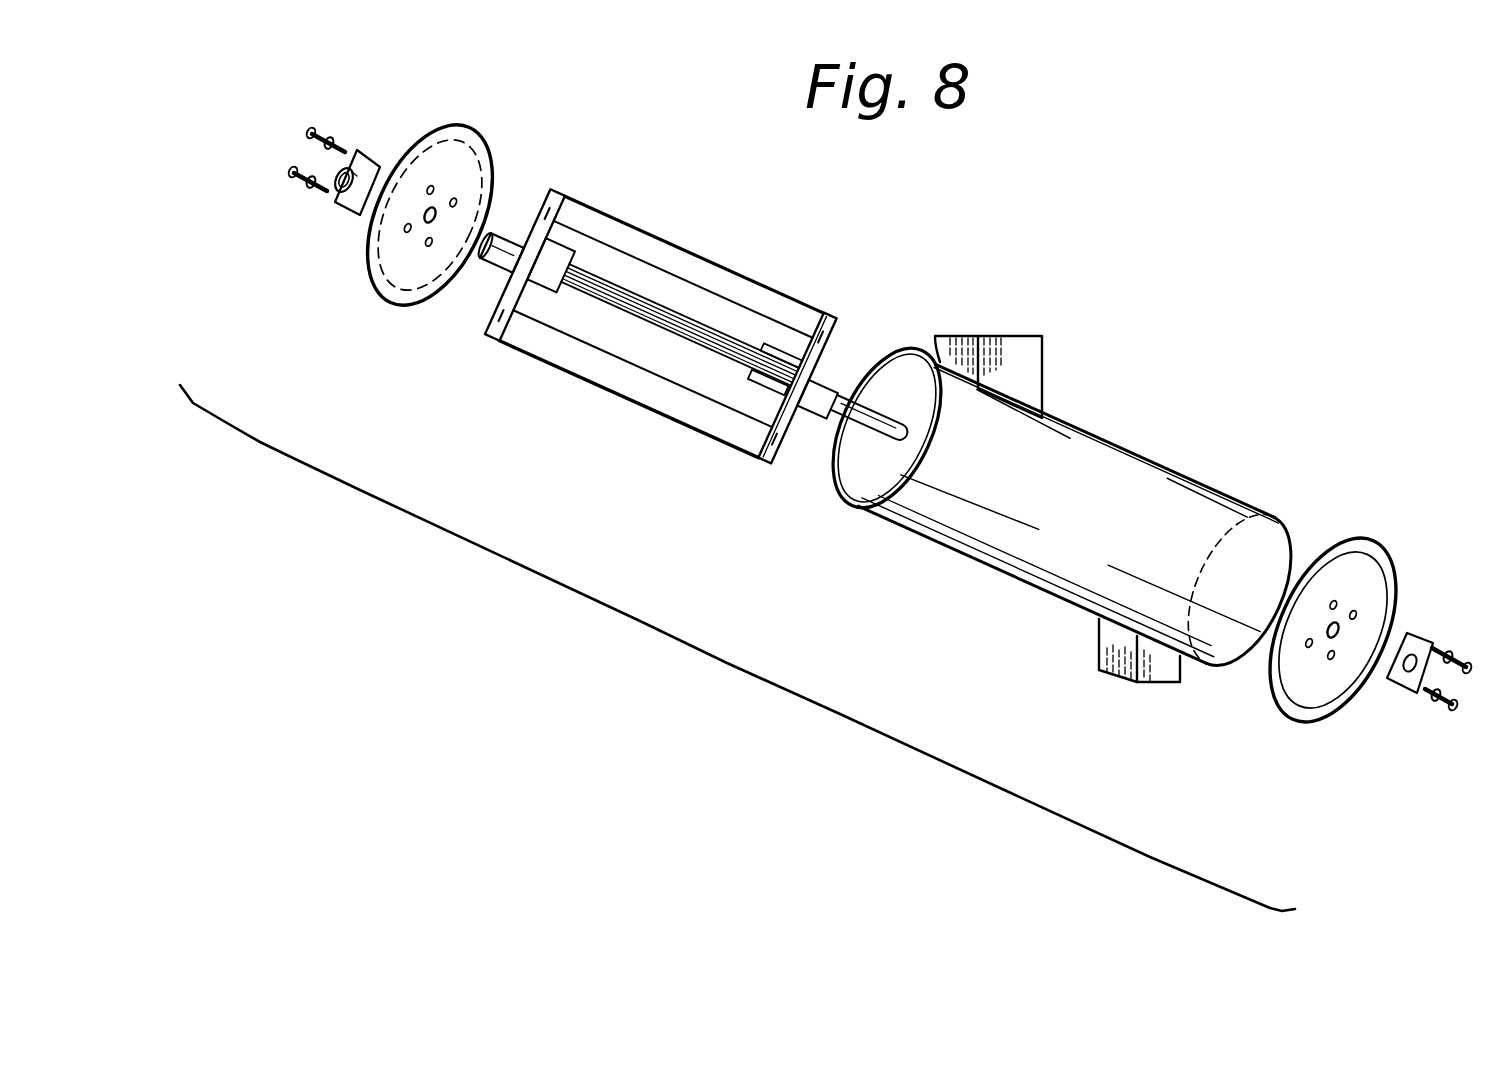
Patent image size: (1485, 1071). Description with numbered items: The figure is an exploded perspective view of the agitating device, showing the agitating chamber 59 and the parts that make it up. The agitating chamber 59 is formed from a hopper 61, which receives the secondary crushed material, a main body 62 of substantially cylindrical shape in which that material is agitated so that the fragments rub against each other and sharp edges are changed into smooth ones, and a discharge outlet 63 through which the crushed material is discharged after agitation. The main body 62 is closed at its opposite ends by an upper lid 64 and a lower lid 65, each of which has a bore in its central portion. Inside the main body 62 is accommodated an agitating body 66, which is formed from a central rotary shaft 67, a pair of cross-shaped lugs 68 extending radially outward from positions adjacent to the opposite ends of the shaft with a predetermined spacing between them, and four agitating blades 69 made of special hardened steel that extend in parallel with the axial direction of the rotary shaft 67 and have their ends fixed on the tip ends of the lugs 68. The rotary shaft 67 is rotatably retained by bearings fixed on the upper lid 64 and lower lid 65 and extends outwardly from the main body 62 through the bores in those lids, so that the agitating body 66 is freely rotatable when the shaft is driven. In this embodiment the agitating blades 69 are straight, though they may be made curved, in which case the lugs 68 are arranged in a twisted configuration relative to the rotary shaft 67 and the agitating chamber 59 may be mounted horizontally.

The agitating chamber 59 is at (730, 665).
The hopper 61 is at (1044, 340).
The main body 62 is at (1157, 456).
The discharge outlet 63 is at (1170, 676).
The upper lid 64 is at (443, 122).
The lower lid 65 is at (1364, 546).
The agitating body 66 is at (742, 278).
The rotary shaft 67 is at (608, 315).
The lugs 68 is at (517, 346).
The agitating blades 69 is at (675, 402).